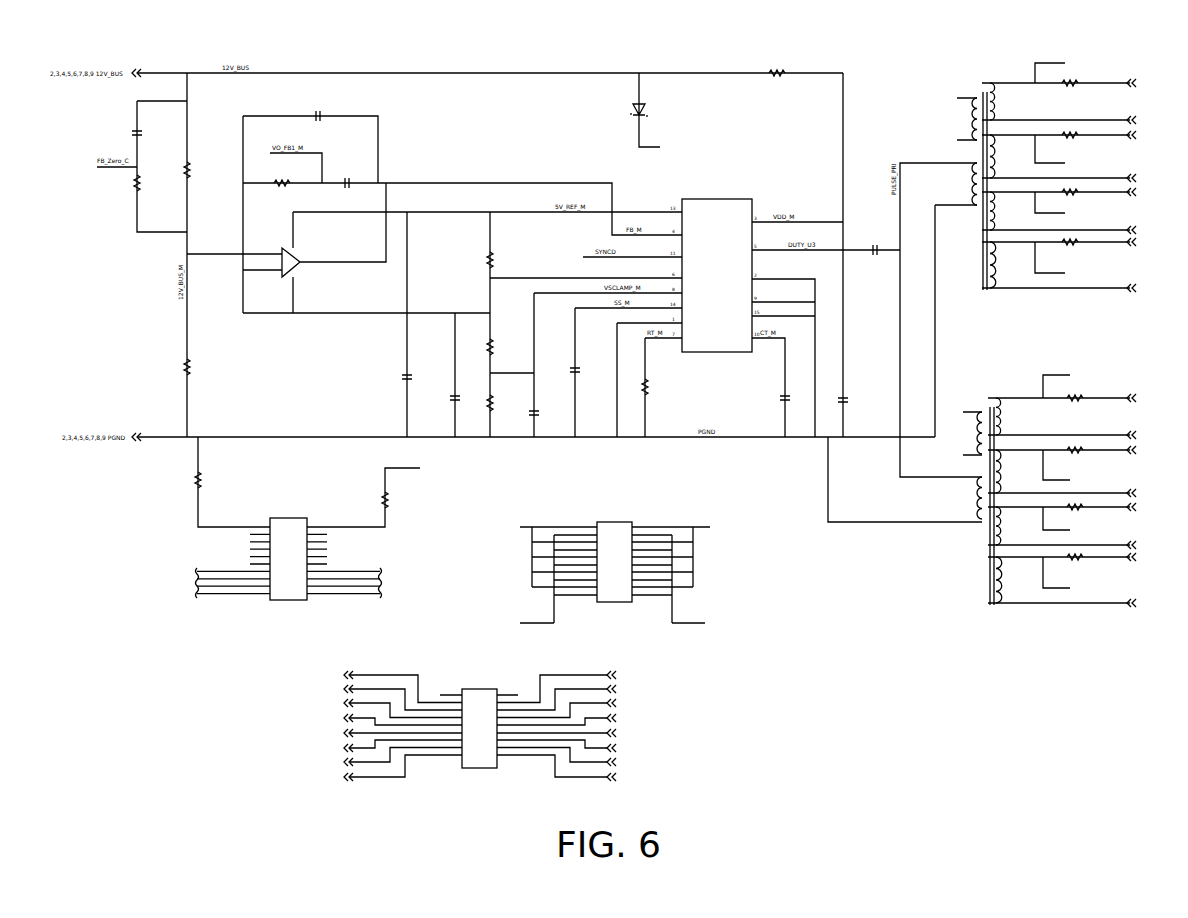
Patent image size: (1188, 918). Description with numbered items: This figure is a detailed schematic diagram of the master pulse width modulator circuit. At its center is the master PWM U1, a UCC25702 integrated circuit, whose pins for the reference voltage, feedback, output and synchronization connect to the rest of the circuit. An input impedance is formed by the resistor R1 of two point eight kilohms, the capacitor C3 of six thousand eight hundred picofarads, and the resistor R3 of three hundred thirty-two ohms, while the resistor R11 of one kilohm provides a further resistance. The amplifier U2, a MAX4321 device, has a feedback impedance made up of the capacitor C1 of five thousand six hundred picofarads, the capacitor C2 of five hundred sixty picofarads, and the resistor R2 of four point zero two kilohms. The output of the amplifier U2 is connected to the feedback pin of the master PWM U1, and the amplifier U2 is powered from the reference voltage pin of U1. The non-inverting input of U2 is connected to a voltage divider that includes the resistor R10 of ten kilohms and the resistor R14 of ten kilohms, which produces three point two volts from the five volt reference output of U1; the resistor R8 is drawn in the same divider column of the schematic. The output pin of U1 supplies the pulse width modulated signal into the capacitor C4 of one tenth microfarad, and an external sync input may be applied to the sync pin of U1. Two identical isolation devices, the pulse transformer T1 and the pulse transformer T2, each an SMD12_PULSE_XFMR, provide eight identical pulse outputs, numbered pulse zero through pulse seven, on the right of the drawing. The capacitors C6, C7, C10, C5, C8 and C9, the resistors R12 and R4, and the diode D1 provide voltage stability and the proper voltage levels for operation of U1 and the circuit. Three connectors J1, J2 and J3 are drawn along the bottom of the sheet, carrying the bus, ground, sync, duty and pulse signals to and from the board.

The master PWM U1 is at (717, 275).
The amplifier U2 is at (327, 248).
The isolation device T1 is at (1063, 182).
The isolation device T2 is at (1066, 497).
The diode D1 is at (650, 112).
The resistor R1 is at (198, 169).
The resistor R2 is at (283, 175).
The resistor R3 is at (144, 184).
The resistor R4 is at (777, 72).
The resistor R8 is at (501, 260).
The resistor R10 is at (501, 347).
The resistor R11 is at (198, 365).
The resistor R12 is at (657, 385).
The resistor R14 is at (501, 402).
The capacitor C1 is at (350, 178).
The capacitor C2 is at (322, 112).
The capacitor C3 is at (151, 132).
The capacitor C4 is at (873, 252).
The capacitor C5 is at (587, 369).
The capacitor C6 is at (853, 399).
The capacitor C7 is at (442, 398).
The capacitor C8 is at (774, 396).
The capacitor C9 is at (399, 376).
The capacitor C10 is at (549, 413).
The connector J1 is at (475, 726).
The connector J2 is at (613, 570).
The connector J3 is at (307, 525).